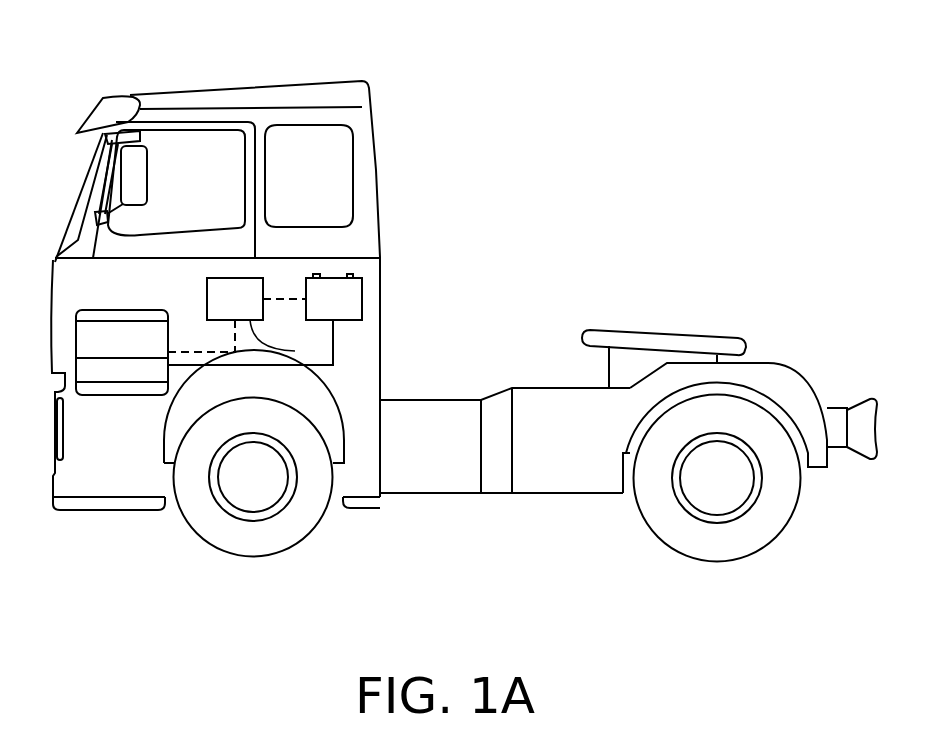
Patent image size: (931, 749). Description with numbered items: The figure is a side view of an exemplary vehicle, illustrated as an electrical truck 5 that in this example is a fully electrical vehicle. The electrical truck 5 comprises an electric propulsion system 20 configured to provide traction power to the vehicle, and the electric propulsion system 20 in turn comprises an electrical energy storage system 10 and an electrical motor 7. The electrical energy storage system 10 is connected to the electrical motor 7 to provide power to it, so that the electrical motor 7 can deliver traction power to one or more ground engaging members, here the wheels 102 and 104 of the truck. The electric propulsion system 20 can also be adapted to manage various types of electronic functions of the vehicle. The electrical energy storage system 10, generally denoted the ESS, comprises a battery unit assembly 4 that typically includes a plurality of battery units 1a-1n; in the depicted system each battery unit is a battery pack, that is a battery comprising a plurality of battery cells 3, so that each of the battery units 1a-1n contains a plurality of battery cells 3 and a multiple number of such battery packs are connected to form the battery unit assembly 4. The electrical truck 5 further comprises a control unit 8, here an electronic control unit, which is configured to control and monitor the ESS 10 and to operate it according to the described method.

The electrical truck 5 is at (455, 69).
The electrical energy storage system 10 is at (362, 613).
The electric propulsion system 20 is at (76, 398).
The electrical motor 7 is at (120, 370).
The control unit 8 is at (295, 351).
The battery unit assembly 4 is at (362, 298).
The battery cells 3 is at (392, 294).
The battery units 1a-1n is at (427, 294).
The wheel 102 is at (255, 477).
The wheel 104 is at (718, 477).